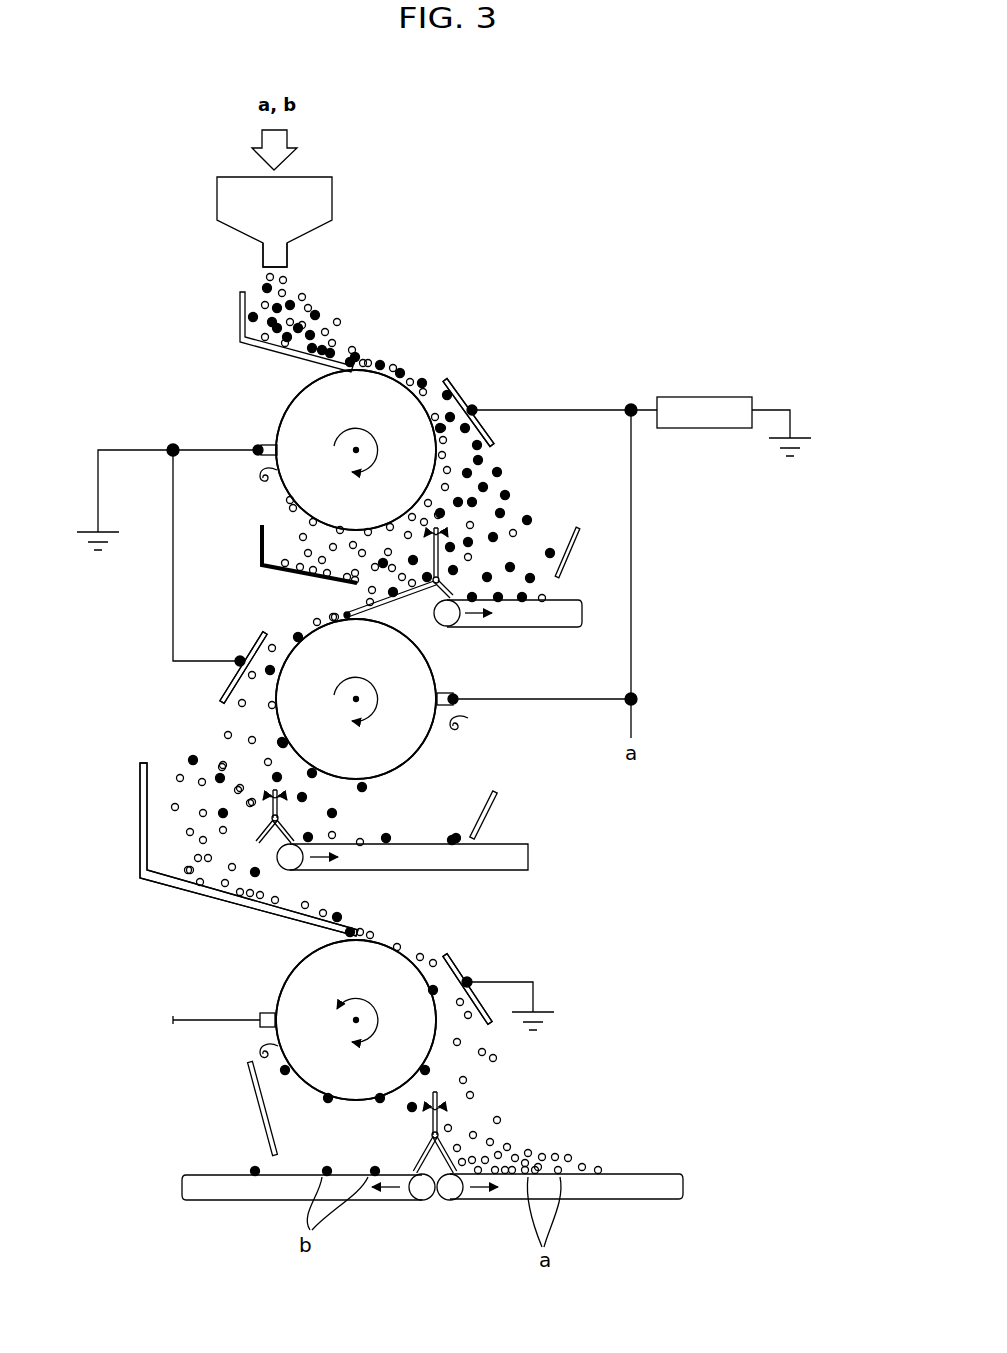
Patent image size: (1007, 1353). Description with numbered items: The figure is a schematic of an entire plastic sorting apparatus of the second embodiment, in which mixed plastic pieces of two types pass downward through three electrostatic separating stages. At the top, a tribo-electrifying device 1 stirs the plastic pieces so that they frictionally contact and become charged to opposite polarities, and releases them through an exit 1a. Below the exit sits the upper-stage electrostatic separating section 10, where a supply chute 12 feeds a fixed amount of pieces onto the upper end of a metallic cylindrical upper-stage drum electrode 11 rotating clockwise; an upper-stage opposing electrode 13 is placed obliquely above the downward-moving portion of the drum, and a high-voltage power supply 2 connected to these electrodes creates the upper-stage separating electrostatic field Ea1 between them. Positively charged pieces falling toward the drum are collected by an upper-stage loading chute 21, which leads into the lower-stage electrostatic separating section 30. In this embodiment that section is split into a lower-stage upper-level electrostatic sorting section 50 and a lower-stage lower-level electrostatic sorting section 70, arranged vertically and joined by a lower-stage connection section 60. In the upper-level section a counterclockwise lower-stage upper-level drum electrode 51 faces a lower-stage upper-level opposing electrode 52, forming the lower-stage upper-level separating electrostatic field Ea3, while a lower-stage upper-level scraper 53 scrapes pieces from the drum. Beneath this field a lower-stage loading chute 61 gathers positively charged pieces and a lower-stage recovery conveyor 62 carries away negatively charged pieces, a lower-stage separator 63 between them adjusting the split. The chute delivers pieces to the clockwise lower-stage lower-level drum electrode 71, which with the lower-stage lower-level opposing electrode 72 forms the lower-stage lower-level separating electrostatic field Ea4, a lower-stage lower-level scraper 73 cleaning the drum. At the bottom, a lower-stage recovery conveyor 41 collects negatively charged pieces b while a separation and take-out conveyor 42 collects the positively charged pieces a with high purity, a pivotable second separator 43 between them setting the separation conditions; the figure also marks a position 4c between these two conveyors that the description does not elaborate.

The tribo-electrifying device 1 is at (316, 200).
The exit 1a is at (283, 253).
The high-voltage power supply 2 is at (695, 406).
The upper-stage electrostatic separating section 10 is at (404, 366).
The upper-stage drum electrode 11 is at (278, 424).
The supply chute 12 is at (283, 352).
The upper-stage opposing electrode 13 is at (468, 397).
The upper-stage loading chute 21 is at (260, 553).
The lower-stage electrostatic separating section 30 is at (122, 661).
The lower-stage recovery conveyor 41 is at (231, 1175).
The separation and take-out conveyor 42 is at (613, 1173).
The second separator 43 is at (437, 1093).
The gap between conveyors 4c is at (435, 1204).
The lower-stage upper-level electrostatic sorting section 50 is at (268, 615).
The lower-stage upper-level drum electrode 51 is at (423, 652).
The lower-stage upper-level opposing electrode 52 is at (247, 652).
The lower-stage upper-level scraper 53 is at (465, 716).
The lower-stage connection section 60 is at (152, 892).
The lower-stage loading chute 61 is at (228, 898).
The lower-stage recovery conveyor 62 is at (398, 843).
The divider 63 is at (283, 817).
The lower-stage lower-level electrostatic sorting section 70 is at (484, 946).
The lower-stage lower-level drum electrode 71 is at (280, 980).
The lower-stage lower-level opposing electrode 72 is at (457, 965).
The lower-stage lower-level scraper 73 is at (258, 1044).
The upper-stage separating electrostatic field Ea1 is at (438, 415).
The lower-stage upper-level separating electrostatic field Ea3 is at (258, 697).
The lower-stage lower-level separating electrostatic field Ea4 is at (443, 983).